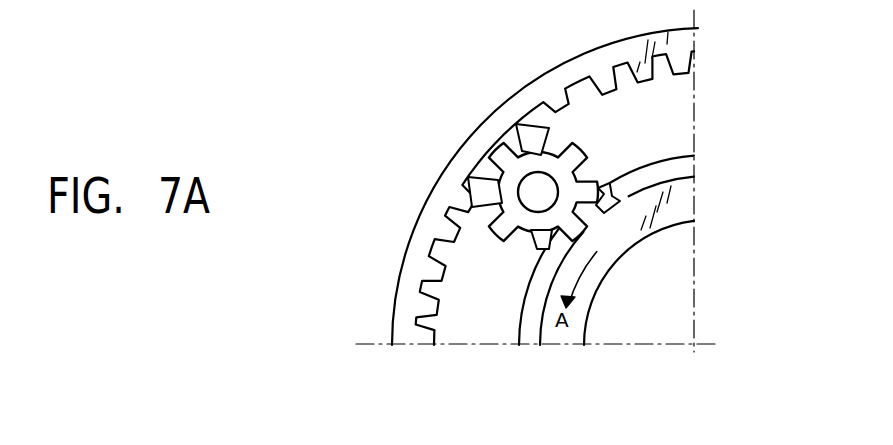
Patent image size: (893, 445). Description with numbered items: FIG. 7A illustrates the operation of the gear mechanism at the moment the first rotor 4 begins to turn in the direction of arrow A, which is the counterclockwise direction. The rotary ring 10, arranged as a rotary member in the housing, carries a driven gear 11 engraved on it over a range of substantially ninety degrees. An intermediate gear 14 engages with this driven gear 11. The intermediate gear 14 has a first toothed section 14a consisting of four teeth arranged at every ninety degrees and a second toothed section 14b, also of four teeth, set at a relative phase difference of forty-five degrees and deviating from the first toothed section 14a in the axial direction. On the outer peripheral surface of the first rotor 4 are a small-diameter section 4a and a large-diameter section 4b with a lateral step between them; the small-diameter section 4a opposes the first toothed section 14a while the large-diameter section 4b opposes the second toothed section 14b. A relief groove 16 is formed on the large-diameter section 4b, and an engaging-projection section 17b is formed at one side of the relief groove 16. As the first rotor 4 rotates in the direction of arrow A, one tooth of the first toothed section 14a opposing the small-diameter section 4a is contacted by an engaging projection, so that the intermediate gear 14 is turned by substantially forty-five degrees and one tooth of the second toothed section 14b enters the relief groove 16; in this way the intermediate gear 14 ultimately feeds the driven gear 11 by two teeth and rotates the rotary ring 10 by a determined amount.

The first rotor 4 is at (688, 202).
The small-diameter section 4a is at (677, 175).
The large-diameter section 4b is at (672, 155).
The rotary ring 10 is at (424, 262).
The driven gear 11 is at (566, 102).
The intermediate gear 14 is at (485, 200).
The first toothed section 14a is at (590, 227).
The second toothed section 14b is at (540, 242).
The relief groove 16 is at (597, 178).
The engaging-projection section 17b is at (588, 219).